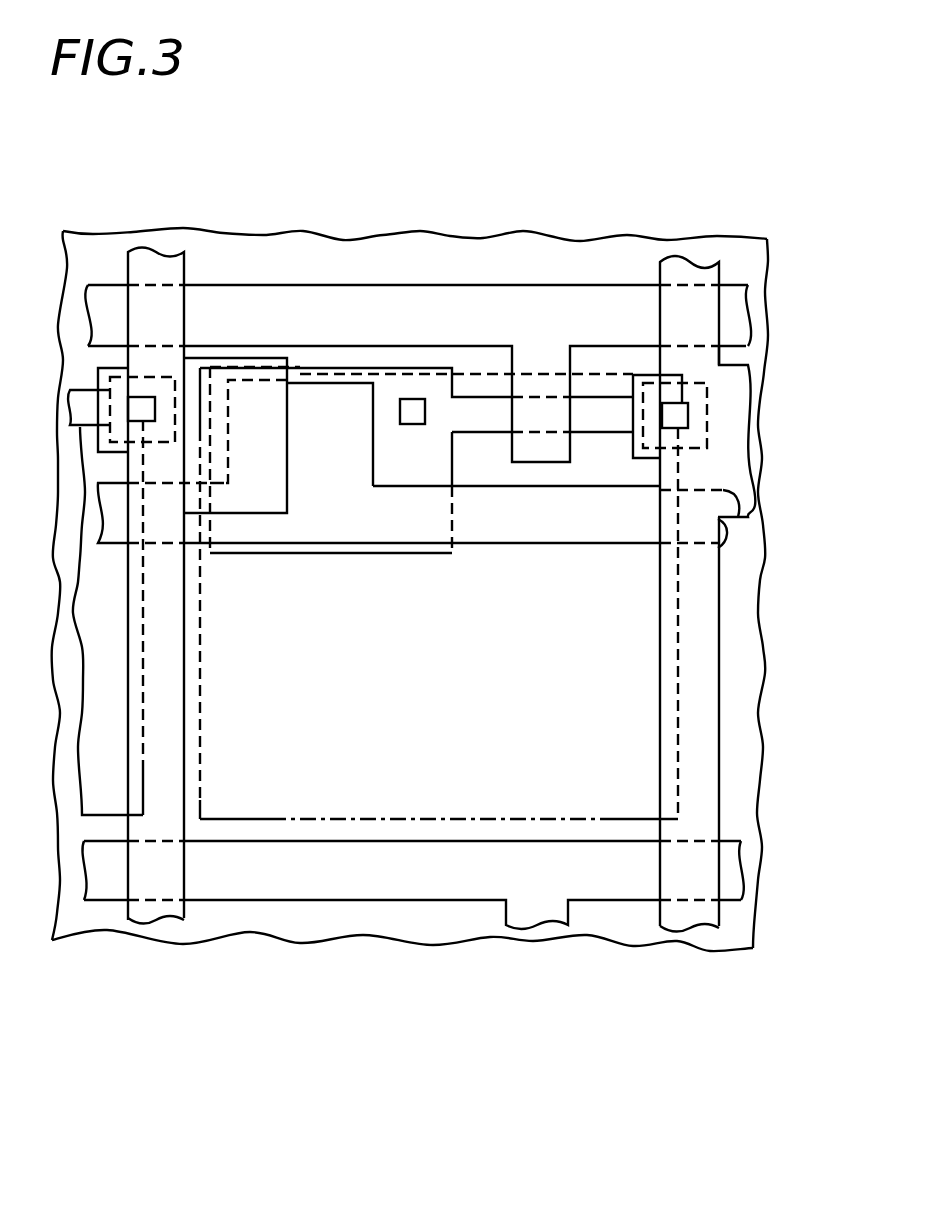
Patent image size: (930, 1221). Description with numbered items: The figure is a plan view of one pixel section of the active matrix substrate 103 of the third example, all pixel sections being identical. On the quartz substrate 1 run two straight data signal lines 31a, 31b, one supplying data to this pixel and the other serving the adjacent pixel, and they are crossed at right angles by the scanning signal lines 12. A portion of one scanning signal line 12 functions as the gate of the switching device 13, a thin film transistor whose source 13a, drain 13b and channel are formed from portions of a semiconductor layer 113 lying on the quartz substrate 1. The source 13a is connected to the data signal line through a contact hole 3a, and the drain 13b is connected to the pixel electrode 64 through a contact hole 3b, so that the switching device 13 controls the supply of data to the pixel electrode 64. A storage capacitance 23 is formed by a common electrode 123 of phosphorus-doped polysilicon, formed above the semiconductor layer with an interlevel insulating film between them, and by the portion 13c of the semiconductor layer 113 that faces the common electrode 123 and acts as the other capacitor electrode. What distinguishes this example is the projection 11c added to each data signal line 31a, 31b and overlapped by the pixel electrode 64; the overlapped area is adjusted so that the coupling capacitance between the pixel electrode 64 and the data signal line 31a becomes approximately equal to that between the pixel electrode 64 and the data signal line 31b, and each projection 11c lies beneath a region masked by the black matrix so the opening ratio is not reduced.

The quartz substrate 1 is at (742, 675).
The contact hole 3a is at (688, 410).
The contact hole 3b is at (415, 398).
The projection 11c is at (197, 364).
The scanning signal line 12 is at (302, 302).
The switching device 13 is at (530, 418).
The source 13a is at (585, 412).
The drain 13b is at (468, 410).
The portion of the semiconductor layer 13c is at (253, 366).
The storage capacitance 23 is at (310, 408).
The data signal line 31a is at (682, 262).
The data signal line 31b is at (153, 258).
The pixel electrode 64 is at (327, 819).
The active matrix substrate 103 is at (467, 963).
The semiconductor layer 113 is at (392, 392).
The common electrode 123 is at (328, 398).